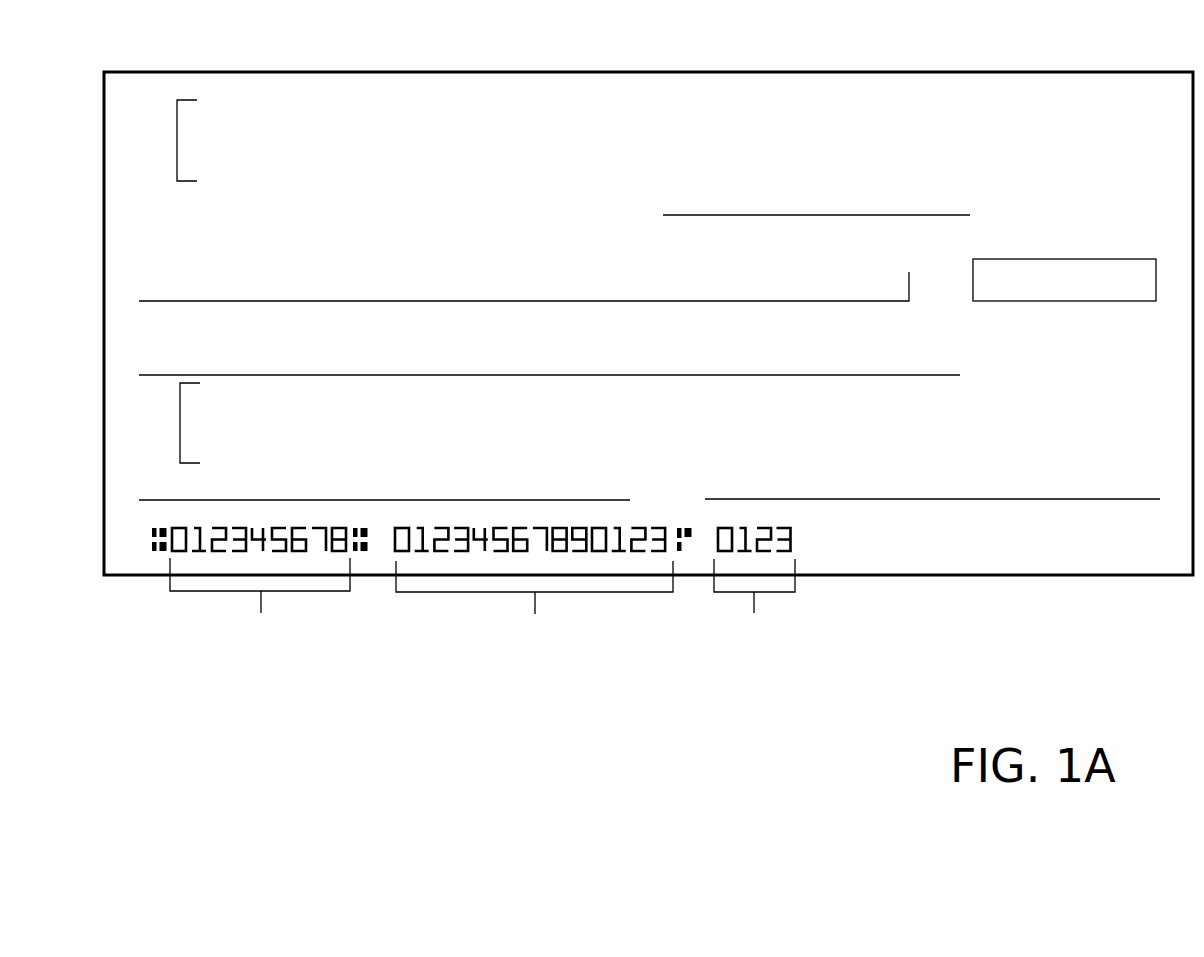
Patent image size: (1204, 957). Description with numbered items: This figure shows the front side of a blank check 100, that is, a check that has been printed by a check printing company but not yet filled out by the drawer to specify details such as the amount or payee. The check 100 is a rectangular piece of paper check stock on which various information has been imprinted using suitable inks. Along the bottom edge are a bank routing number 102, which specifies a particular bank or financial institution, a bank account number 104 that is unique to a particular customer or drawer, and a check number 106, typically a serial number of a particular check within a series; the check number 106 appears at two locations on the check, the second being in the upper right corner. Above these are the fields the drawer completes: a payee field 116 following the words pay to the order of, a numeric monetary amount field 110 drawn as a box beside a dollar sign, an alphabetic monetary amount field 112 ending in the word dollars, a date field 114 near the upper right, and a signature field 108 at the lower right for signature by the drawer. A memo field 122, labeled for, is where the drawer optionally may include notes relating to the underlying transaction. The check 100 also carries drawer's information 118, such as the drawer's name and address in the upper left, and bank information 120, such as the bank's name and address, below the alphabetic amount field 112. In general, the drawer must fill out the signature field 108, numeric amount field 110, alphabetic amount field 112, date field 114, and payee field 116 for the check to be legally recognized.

The blank check 100 is at (1068, 592).
The bank routing number 102 is at (260, 683).
The bank account number 104 is at (540, 683).
The check number 106 is at (1145, 95).
The signature field 108 is at (997, 498).
The numeric monetary amount field 110 is at (1049, 276).
The alphabetic monetary amount field 112 is at (440, 375).
The date field 114 is at (782, 215).
The payee field 116 is at (318, 301).
The drawer's information 118 is at (177, 141).
The bank information 120 is at (180, 421).
The memo field 122 is at (397, 500).